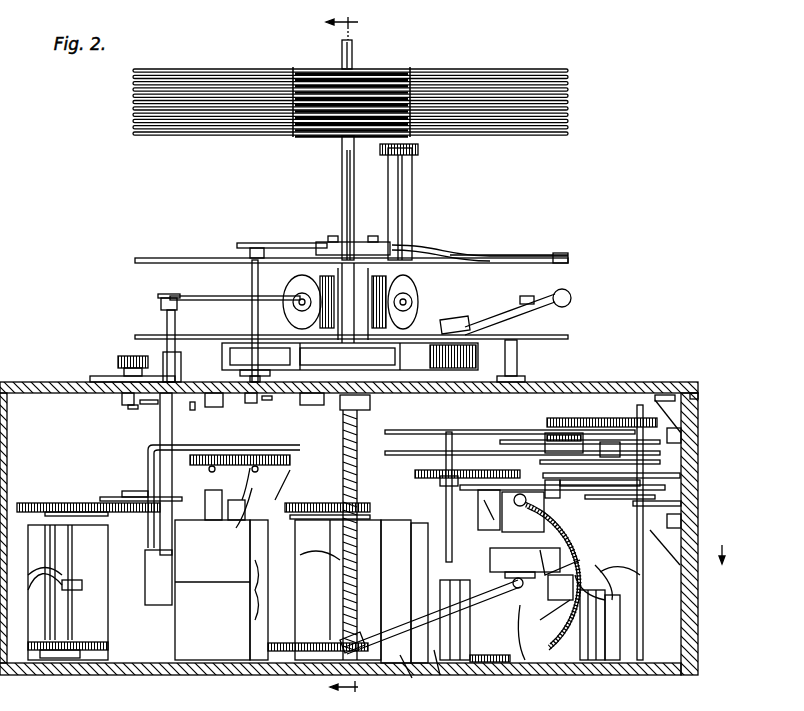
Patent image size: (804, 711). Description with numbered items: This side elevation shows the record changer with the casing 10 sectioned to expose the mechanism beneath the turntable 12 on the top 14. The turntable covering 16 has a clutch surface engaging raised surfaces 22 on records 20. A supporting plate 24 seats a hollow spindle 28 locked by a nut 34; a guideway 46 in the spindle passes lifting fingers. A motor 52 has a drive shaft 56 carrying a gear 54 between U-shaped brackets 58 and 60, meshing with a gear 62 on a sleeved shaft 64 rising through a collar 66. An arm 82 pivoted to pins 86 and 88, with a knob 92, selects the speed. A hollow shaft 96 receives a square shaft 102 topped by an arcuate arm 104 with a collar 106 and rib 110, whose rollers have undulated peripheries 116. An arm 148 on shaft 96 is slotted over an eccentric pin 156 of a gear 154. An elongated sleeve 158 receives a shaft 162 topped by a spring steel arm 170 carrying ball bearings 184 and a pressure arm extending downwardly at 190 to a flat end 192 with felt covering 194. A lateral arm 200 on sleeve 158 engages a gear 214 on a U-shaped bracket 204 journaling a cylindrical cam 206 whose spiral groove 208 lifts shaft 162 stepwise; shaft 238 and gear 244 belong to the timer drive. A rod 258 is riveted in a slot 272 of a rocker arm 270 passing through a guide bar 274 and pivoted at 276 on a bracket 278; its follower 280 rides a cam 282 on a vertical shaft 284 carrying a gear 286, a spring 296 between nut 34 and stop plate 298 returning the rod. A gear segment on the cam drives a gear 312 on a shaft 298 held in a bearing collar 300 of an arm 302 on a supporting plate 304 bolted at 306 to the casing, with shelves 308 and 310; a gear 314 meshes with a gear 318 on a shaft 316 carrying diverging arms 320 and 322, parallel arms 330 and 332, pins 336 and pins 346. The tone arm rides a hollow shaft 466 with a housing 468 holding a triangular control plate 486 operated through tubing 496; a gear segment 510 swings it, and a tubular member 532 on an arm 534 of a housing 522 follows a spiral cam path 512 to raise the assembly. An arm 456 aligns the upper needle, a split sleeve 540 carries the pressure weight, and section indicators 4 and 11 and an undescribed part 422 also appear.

The section line 4- 4 is at (349, 358).
The housing 10 is at (699, 416).
The section line 11- 11 is at (722, 565).
The frame plate 12 is at (518, 355).
The support 14 is at (605, 418).
The housing block 16 is at (222, 358).
The disk stack 20 is at (568, 118).
The disk hub 22 is at (406, 66).
The base member 24 is at (165, 707).
The shaft 28 is at (342, 162).
The housing portion 34 is at (345, 400).
The inner rod 46 is at (347, 192).
The unit 52 is at (199, 564).
The rack 54 is at (218, 455).
The block 56 is at (205, 487).
The arm 58 is at (293, 471).
The link 60 is at (228, 494).
The bracket 62 is at (262, 452).
The bracket end 64 is at (258, 418).
The mounting foot 66 is at (245, 381).
The bracket 82 is at (140, 404).
The nut 86 is at (312, 405).
The bracket 88 is at (122, 400).
The gear 92 is at (125, 360).
The post base 96 is at (165, 355).
The post 102 is at (175, 320).
The cap 104 is at (172, 294).
The block 106 is at (160, 305).
The rod 110 is at (200, 296).
The gear 116 is at (412, 292).
The bar 148 is at (138, 496).
The rack 154 is at (40, 504).
The slide 156 is at (125, 491).
The housing 158 is at (213, 574).
The post 162 is at (252, 292).
The plate 170 is at (270, 250).
The bracket 184 is at (370, 242).
The tube 190 is at (418, 246).
The plate 192 is at (512, 256).
The end plate 194 is at (570, 252).
The bar 200 is at (288, 500).
The base 204 is at (450, 674).
The column 206 is at (252, 610).
The housing 208 is at (330, 590).
The rack 214 is at (296, 505).
The unit 238 is at (72, 610).
The foot 244 is at (70, 652).
The nut 258 is at (360, 490).
The column 270 is at (396, 600).
The base 272 is at (405, 677).
The column 274 is at (418, 535).
The link 276 is at (549, 616).
The link 278 is at (530, 662).
The block 280 is at (558, 575).
The link 282 is at (638, 589).
The column 284 is at (605, 610).
The sector gear 286 is at (582, 548).
The screw 296 is at (358, 462).
The shaft 298 is at (325, 655).
The bar 300 is at (630, 500).
The bar 302 is at (680, 505).
The bolt 304 is at (688, 535).
The bolt 306 is at (684, 436).
The brace 308 is at (660, 395).
The bar 310 is at (592, 487).
The link 312 is at (612, 592).
The corner 314 is at (698, 392).
The bar 316 is at (640, 418).
The rack 318 is at (560, 433).
The bar 320 is at (440, 460).
The rack 322 is at (505, 470).
The bar 330 is at (500, 430).
The knurled block 332 is at (478, 357).
The rack 336 is at (590, 418).
The block 346 is at (555, 493).
The arm 422 is at (572, 294).
The pad 456 is at (456, 318).
The rod 466 is at (548, 337).
The unit 468 is at (523, 512).
The unit 486 is at (480, 522).
The column 496 is at (612, 635).
The rod 510 is at (450, 497).
The column 512 is at (478, 665).
The unit 522 is at (525, 563).
The rack 532 is at (476, 662).
The lever 534 is at (474, 590).
The detail 540 is at (547, 296).